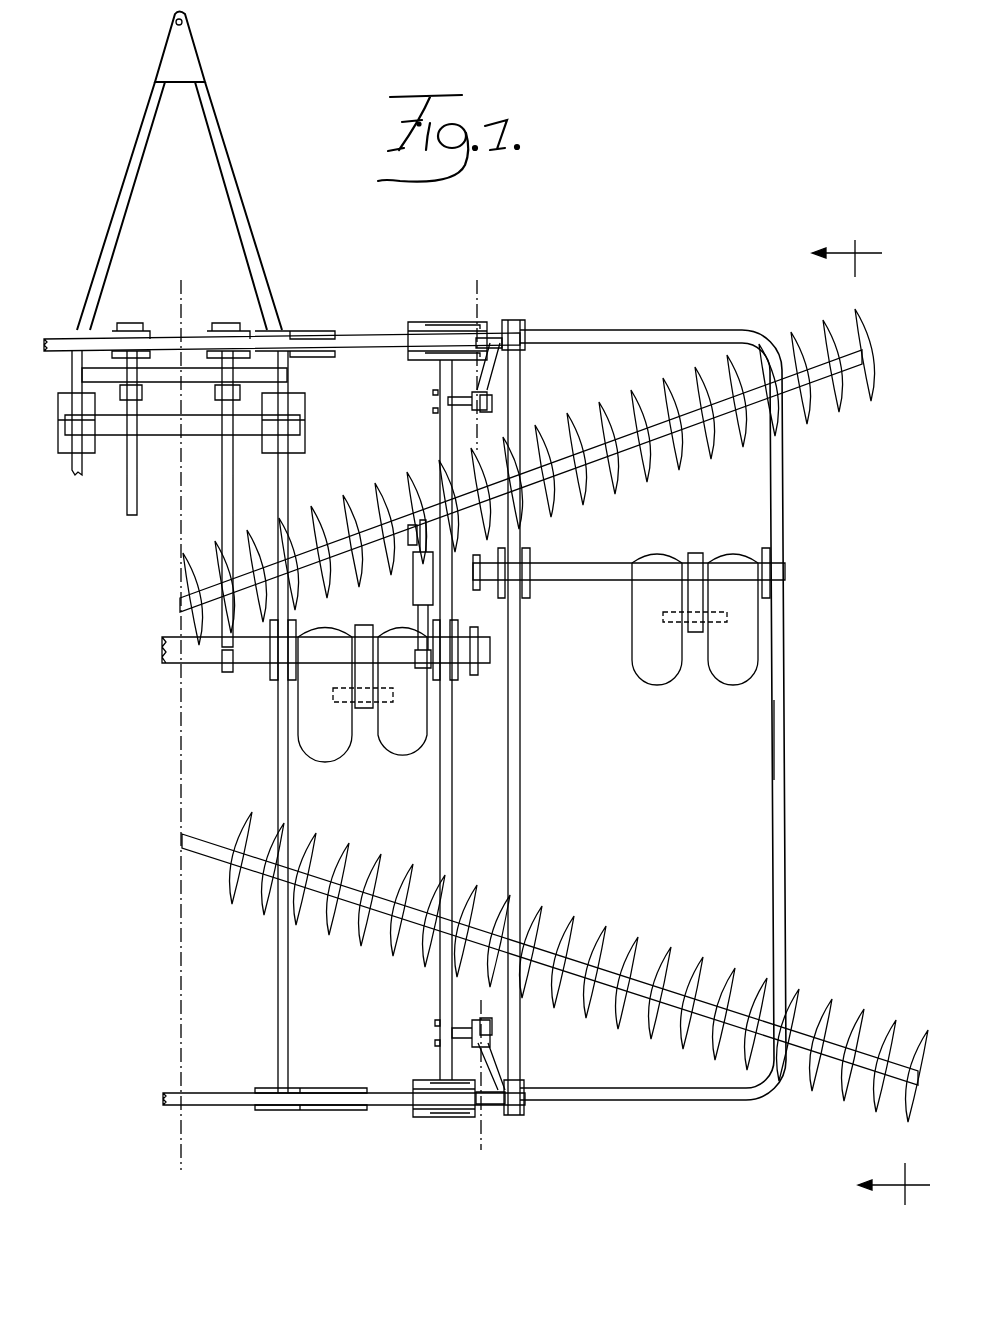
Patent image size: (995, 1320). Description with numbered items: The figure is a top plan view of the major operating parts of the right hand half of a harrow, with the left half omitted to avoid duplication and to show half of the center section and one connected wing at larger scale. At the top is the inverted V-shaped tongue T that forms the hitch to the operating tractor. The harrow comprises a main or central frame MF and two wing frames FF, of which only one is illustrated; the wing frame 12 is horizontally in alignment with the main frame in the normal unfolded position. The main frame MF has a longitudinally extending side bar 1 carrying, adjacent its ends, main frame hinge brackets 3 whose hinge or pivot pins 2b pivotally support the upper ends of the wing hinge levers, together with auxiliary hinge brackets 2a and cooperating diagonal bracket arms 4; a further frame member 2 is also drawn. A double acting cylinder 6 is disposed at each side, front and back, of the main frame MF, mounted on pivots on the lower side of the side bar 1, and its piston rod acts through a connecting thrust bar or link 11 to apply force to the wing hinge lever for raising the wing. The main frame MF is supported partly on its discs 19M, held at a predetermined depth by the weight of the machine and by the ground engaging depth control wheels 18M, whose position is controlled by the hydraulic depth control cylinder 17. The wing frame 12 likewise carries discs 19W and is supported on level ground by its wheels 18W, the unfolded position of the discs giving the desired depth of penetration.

The tongue T is at (205, 68).
The side bar 1 is at (190, 340).
The double acting cylinder 6 is at (307, 338).
The main frame MF is at (352, 340).
The main frame hinge bracket 3 is at (460, 323).
The hinge pin 2b is at (482, 325).
The diagonal bracket arm 4 is at (485, 370).
The auxiliary hinge bracket 2a is at (457, 402).
The frame member 2 is at (515, 812).
The wing frame FF is at (655, 335).
The wing frame 12 is at (787, 742).
The depth control wheel 18M is at (332, 750).
The wheels of front frame 18W is at (660, 675).
The hydraulic depth control cylinder 17 is at (417, 585).
The main frame discs 19M is at (380, 503).
The wing discs 19W is at (718, 463).
The thrust link 11 is at (880, 229).